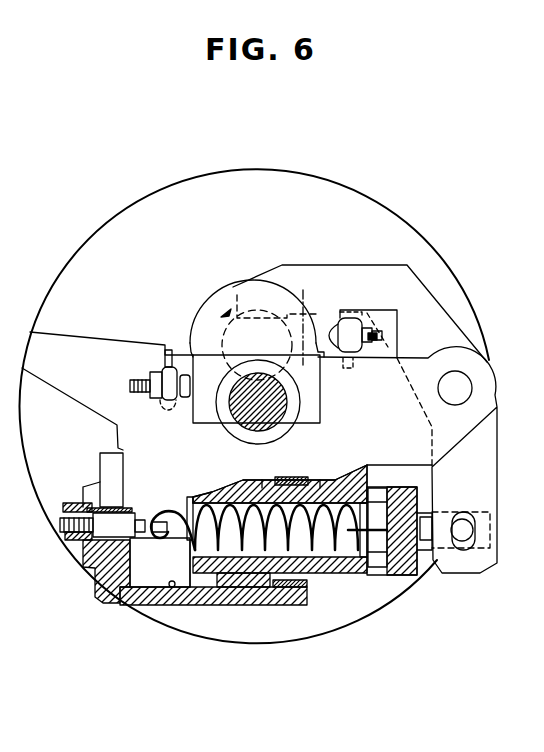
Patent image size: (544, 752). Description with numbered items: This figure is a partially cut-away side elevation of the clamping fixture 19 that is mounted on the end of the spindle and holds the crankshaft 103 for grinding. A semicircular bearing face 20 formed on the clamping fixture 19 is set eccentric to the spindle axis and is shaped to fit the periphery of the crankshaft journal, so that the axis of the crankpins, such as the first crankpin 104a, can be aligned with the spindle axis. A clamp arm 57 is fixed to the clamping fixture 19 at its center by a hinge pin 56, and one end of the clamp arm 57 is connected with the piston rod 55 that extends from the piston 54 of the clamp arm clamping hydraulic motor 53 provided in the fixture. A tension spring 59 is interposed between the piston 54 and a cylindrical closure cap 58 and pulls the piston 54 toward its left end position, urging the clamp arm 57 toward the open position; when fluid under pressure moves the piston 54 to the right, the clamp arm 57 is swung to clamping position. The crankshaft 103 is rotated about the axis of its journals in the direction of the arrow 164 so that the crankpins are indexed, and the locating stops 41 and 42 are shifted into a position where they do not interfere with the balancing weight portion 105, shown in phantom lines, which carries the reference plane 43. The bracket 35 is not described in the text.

The clamping fixture 19 is at (434, 249).
The clamp arm 57 is at (437, 302).
The hinge pin 56 is at (461, 389).
The switch bracket 35 is at (389, 313).
The reference plane 43 is at (333, 340).
The locating stop 41 is at (334, 358).
The balancing weight portion 105 is at (199, 330).
The arrow 164 is at (222, 302).
The semicircular bearing face 20 is at (207, 303).
The first crankpin 104a is at (289, 428).
The crankshaft 103 is at (300, 392).
The locating stop 42 is at (184, 403).
The cylindrical closure cap 58 is at (93, 572).
The clamp arm clamping hydraulic motor 53 is at (171, 590).
The piston 54 is at (228, 607).
The piston rod 55 is at (360, 580).
The tension spring 59 is at (303, 552).